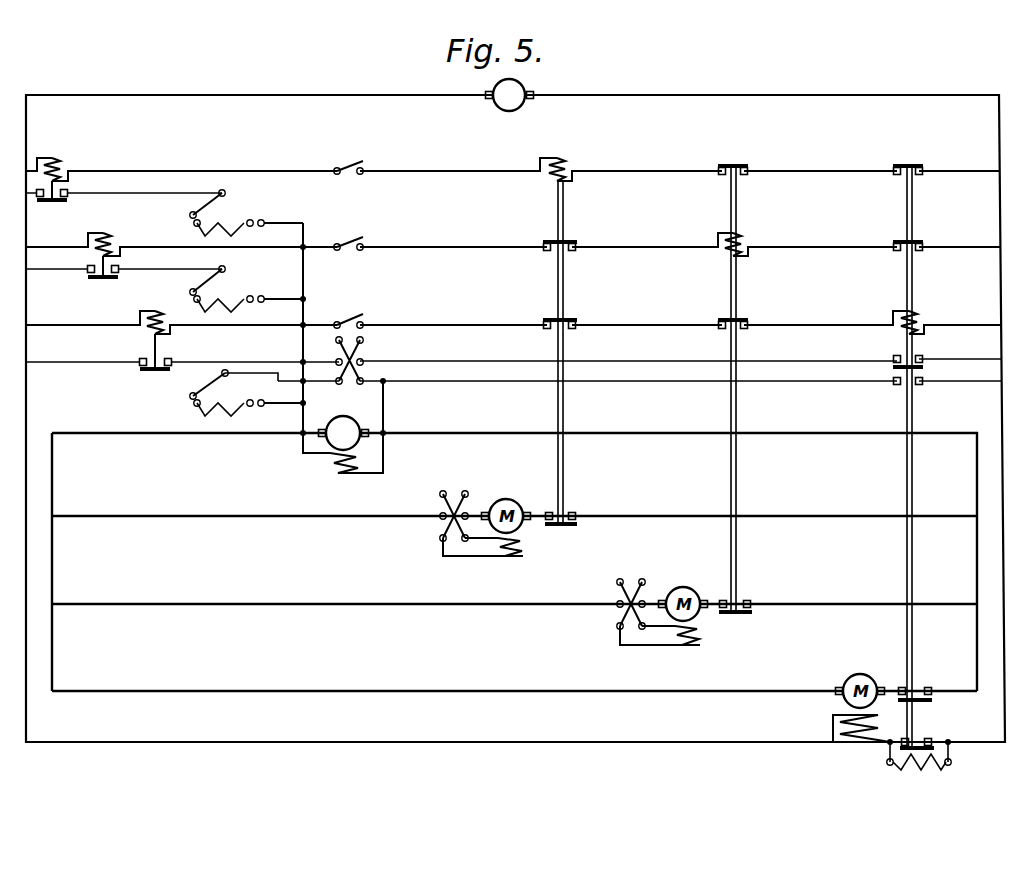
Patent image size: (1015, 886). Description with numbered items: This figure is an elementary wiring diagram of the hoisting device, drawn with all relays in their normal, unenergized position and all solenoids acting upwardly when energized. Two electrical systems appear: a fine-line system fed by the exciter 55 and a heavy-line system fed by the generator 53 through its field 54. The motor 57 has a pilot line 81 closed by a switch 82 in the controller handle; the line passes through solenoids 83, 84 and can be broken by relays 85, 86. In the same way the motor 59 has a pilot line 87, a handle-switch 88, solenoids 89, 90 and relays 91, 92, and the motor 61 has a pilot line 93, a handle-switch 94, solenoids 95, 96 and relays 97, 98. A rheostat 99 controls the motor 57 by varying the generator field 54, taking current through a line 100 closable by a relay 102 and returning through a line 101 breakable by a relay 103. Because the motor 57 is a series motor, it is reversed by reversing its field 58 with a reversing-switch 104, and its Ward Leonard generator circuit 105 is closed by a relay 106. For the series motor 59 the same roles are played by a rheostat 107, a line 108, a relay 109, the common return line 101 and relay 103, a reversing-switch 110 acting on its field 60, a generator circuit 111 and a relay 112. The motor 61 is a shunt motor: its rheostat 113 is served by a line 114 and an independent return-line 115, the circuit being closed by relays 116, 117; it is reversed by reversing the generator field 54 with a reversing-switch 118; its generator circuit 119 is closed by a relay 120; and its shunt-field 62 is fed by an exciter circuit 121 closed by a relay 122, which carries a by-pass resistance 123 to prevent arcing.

The exciter 55 is at (505, 102).
The solenoid 84 is at (54, 158).
The relay 102 is at (36, 202).
The line 100 is at (118, 192).
The pilot line 81 is at (240, 172).
The switch 82 is at (348, 156).
The solenoid 83 is at (556, 150).
The relay 86 is at (731, 164).
The relay 85 is at (907, 164).
The rheostat 99 is at (246, 213).
The solenoid 90 is at (108, 236).
The relay 109 is at (117, 279).
The line 108 is at (80, 271).
The rheostat 107 is at (212, 289).
The handle-switch 88 is at (331, 233).
The pilot line 87 is at (436, 248).
The relay 92 is at (562, 244).
The solenoid 89 is at (740, 240).
The relay 91 is at (914, 244).
The solenoid 96 is at (140, 314).
The relay 116 is at (163, 360).
The line 114 is at (62, 366).
The handle-switch 94 is at (333, 311).
The pilot line 93 is at (453, 312).
The relay 98 is at (562, 320).
The relay 97 is at (738, 320).
The solenoid 95 is at (916, 320).
The reversing-switch 118 is at (352, 356).
The return-line 115 is at (478, 362).
The relay 117 is at (916, 355).
The relay 103 is at (918, 386).
The return line 101 is at (446, 386).
The rheostat 113 is at (194, 400).
The generator 53 is at (348, 418).
The generator field 54 is at (340, 472).
The Ward Leonard generator circuit 105 is at (162, 517).
The reversing-switch 104 is at (452, 498).
The motor 57 is at (514, 499).
The field 58 is at (504, 560).
The relay 106 is at (566, 510).
The generator circuit 111 is at (154, 605).
The reversing-switch 110 is at (629, 586).
The motor 59 is at (690, 588).
The field 60 is at (686, 650).
The relay 112 is at (744, 602).
The generator circuit 119 is at (154, 692).
The motor 61 is at (842, 672).
The relay 120 is at (920, 690).
The exciter circuit 121 is at (154, 742).
The shunt-field 62 is at (856, 750).
The relay 122 is at (922, 740).
The by-pass resistance 123 is at (905, 778).